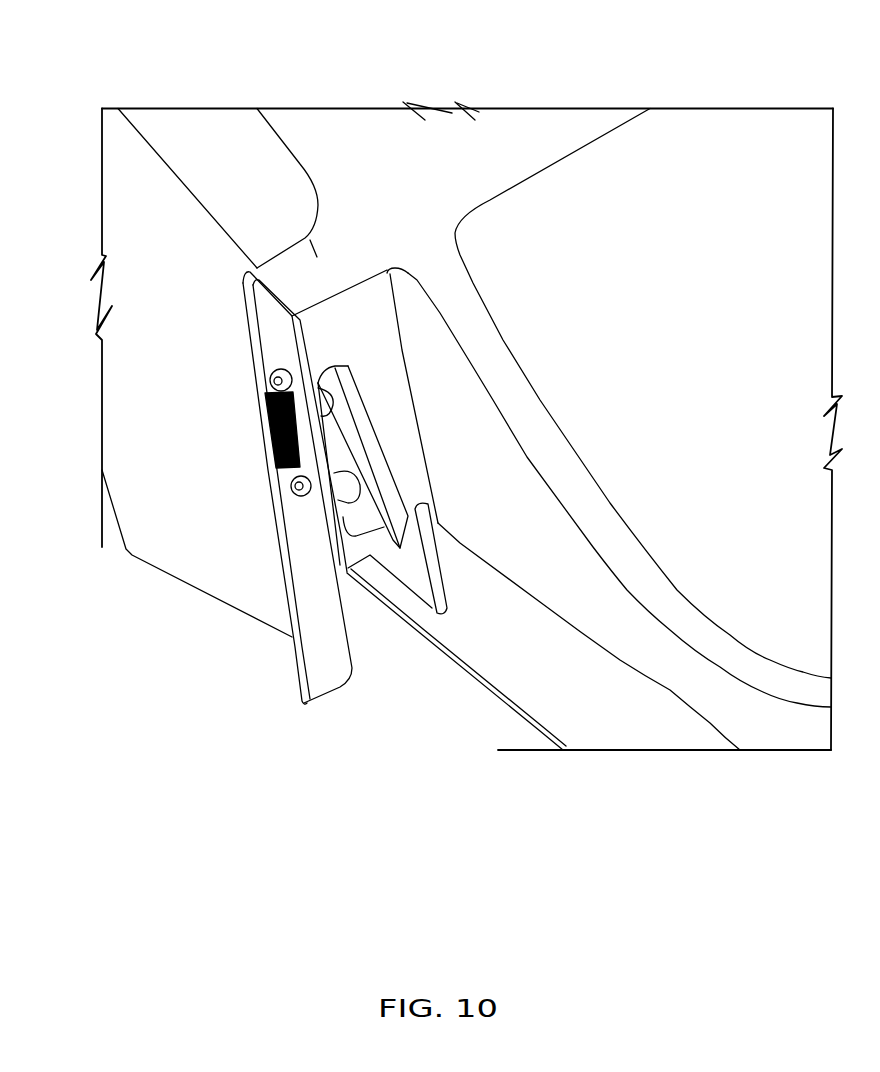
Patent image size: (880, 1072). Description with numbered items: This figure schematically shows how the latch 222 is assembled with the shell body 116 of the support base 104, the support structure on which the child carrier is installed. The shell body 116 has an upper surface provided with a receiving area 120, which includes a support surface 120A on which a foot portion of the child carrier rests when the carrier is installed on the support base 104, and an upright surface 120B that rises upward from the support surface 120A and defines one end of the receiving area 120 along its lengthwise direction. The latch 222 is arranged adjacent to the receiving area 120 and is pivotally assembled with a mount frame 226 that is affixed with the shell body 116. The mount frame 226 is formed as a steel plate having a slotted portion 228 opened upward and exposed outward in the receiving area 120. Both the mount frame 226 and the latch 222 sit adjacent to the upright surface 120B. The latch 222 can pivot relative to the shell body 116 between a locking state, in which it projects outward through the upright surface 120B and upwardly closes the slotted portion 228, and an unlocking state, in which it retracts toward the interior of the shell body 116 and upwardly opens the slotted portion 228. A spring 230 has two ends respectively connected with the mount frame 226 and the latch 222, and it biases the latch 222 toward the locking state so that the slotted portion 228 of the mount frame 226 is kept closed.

The support base 104 is at (538, 108).
The shell body 116 is at (308, 237).
The receiving area 120 is at (582, 575).
The support surface 120A is at (502, 678).
The upright surface 120B is at (348, 308).
The latch 222 is at (387, 483).
The mount frame 226 is at (363, 390).
The slotted portion 228 is at (423, 580).
The spring 230 is at (252, 422).